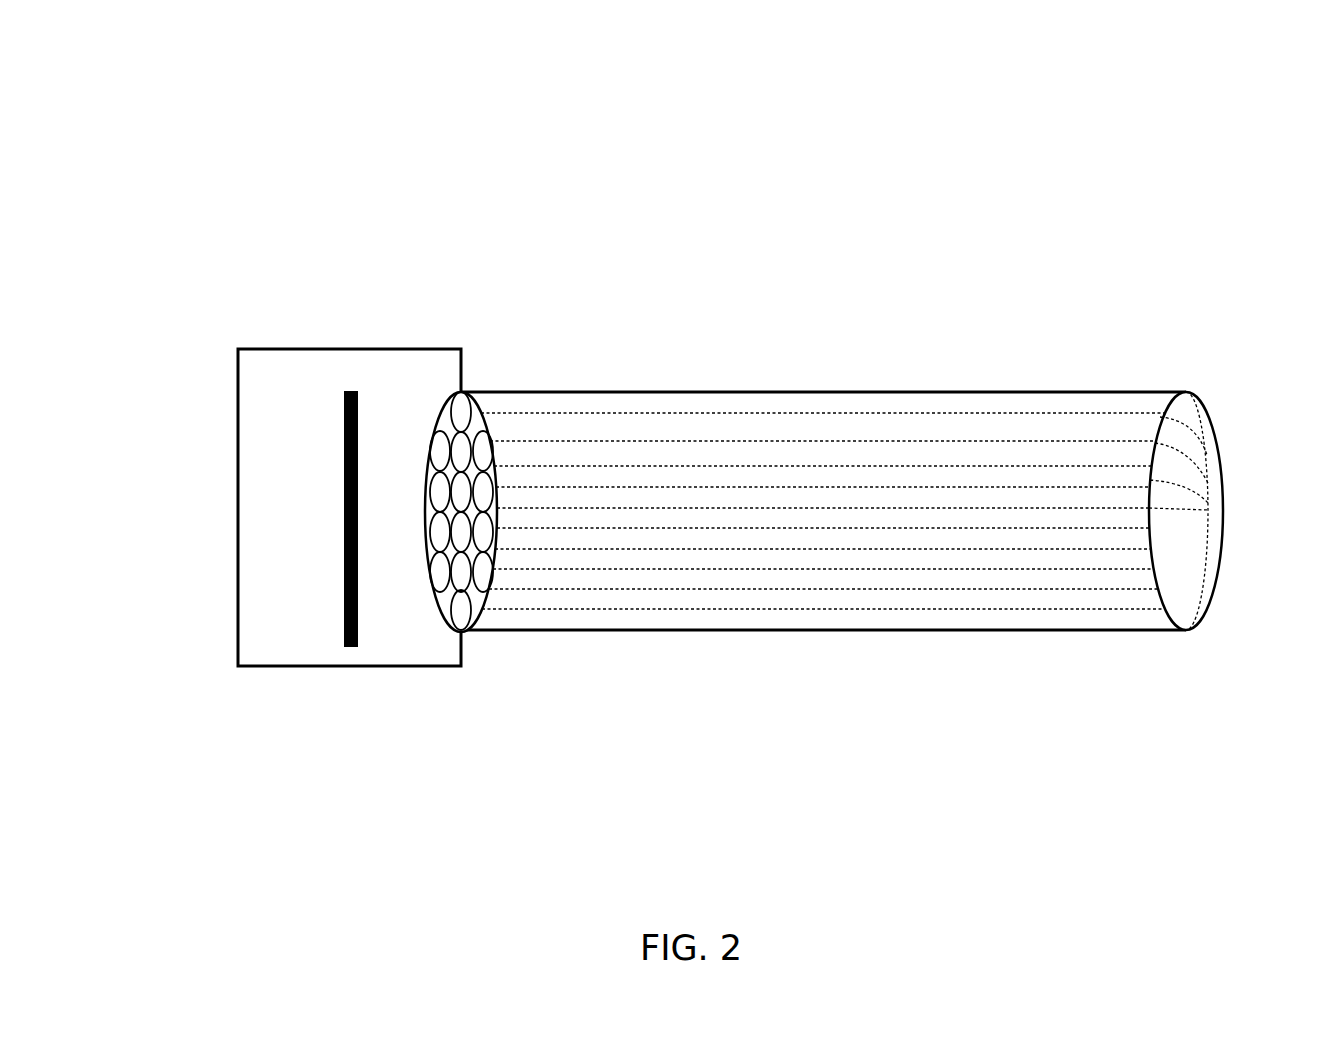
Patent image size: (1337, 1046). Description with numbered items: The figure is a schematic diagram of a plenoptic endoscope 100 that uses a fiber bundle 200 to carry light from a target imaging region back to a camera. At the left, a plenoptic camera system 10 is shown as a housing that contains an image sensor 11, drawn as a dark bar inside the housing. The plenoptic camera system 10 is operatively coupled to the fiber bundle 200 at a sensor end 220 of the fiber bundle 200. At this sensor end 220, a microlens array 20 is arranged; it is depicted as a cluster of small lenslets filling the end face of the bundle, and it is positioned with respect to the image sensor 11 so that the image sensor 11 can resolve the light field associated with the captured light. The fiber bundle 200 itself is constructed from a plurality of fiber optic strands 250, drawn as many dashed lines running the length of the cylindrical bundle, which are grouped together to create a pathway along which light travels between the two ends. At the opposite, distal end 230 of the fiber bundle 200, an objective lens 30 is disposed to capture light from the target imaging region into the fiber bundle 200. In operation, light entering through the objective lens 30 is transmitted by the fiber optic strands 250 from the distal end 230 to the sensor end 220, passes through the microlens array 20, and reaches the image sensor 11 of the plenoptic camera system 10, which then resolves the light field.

The plenoptic endoscope 100 is at (662, 142).
The plenoptic camera system 10 is at (308, 340).
The image sensor 11 is at (344, 568).
The microlens array 20 is at (483, 450).
The fiber bundle 200 is at (848, 363).
The sensor end 220 is at (488, 660).
The distal end 230 is at (1198, 661).
The fiber optic strands 250 is at (882, 413).
The objective lens 30 is at (1187, 483).